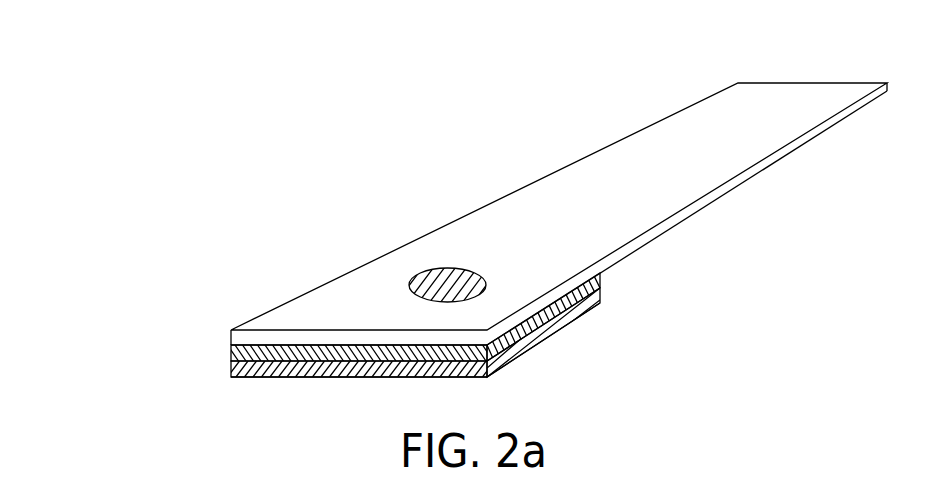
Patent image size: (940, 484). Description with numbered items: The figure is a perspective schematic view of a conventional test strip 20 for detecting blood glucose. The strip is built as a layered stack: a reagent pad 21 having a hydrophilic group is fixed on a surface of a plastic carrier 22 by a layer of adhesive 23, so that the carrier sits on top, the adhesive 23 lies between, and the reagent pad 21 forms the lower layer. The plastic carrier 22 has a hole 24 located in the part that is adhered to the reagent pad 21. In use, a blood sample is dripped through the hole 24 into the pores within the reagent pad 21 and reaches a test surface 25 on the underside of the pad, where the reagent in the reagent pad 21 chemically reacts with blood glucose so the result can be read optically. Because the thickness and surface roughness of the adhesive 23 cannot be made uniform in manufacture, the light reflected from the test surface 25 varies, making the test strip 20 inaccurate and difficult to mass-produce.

The test strip 20 is at (538, 232).
The reagent pad 21 is at (232, 368).
The plastic carrier 22 is at (743, 178).
The adhesive 23 is at (232, 352).
The hole 24 is at (444, 276).
The test surface 25 is at (352, 378).